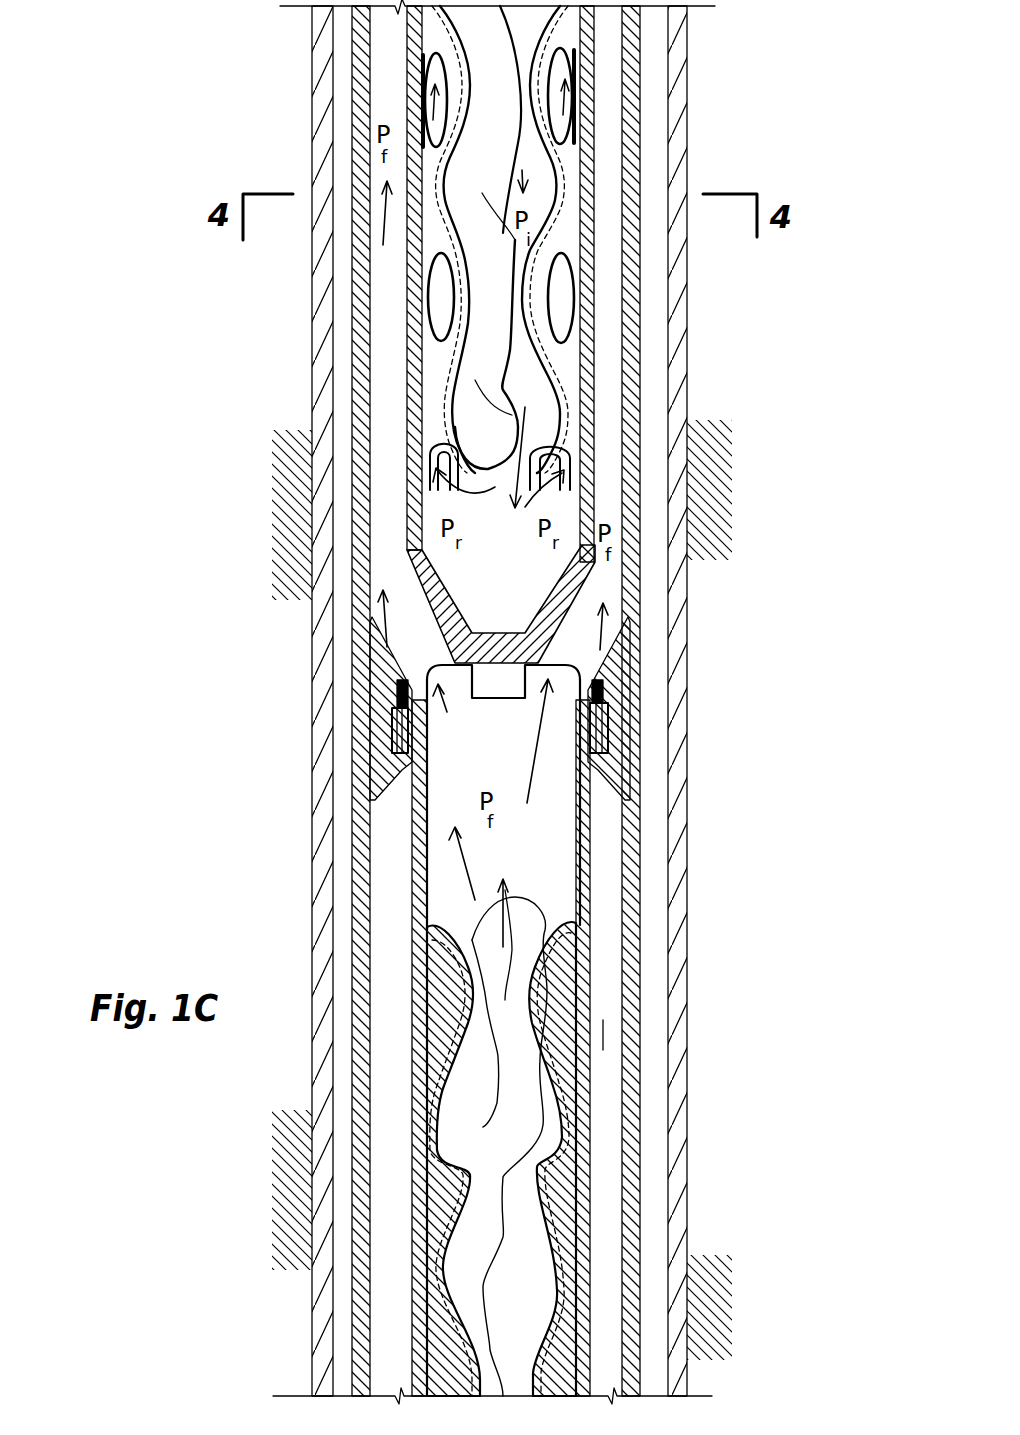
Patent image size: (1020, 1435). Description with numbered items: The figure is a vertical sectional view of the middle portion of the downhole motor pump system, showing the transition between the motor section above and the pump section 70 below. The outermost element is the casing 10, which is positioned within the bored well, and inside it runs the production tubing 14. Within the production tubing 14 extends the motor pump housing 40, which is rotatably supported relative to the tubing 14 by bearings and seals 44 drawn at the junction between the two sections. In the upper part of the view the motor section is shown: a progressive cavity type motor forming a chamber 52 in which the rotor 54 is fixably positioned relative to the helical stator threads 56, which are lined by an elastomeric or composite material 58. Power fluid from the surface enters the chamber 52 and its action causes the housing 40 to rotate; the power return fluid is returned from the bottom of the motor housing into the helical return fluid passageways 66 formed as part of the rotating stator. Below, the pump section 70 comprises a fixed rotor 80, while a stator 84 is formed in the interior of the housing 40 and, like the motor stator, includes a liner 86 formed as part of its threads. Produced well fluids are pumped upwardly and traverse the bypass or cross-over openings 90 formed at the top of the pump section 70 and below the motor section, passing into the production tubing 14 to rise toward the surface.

The casing 10 is at (314, 102).
The production tubing 14 is at (630, 148).
The motor pump housing 40 is at (587, 296).
The bearings and seals 44 is at (605, 727).
The chamber 52 is at (592, 190).
The rotor 54 is at (420, 263).
The helical stator threads 56 is at (428, 372).
The elastomeric or composite material 58 is at (560, 365).
The helical return fluid passageways 66 is at (565, 80).
The pump section 70 is at (604, 1035).
The fixed rotor 80 is at (530, 1262).
The stator 84 is at (563, 1155).
The liner 86 is at (582, 950).
The bypass or cross-over openings 90 is at (420, 647).